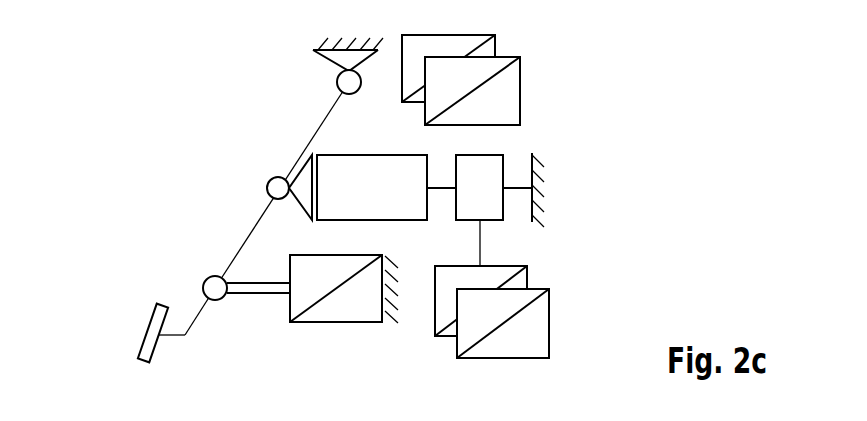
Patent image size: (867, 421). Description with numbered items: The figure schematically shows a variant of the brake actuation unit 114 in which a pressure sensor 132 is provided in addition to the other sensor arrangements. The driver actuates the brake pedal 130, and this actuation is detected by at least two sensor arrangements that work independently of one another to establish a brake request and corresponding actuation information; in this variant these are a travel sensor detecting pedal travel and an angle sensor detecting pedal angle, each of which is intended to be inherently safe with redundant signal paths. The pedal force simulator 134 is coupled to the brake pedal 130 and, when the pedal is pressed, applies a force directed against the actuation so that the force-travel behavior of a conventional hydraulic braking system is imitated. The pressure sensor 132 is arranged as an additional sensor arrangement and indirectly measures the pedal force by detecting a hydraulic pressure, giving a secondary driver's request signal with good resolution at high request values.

The brake actuation unit 114 is at (590, 48).
The brake pedal 130 is at (146, 334).
The pedal force simulator 134 is at (388, 201).
The pressure sensor 132 is at (549, 317).